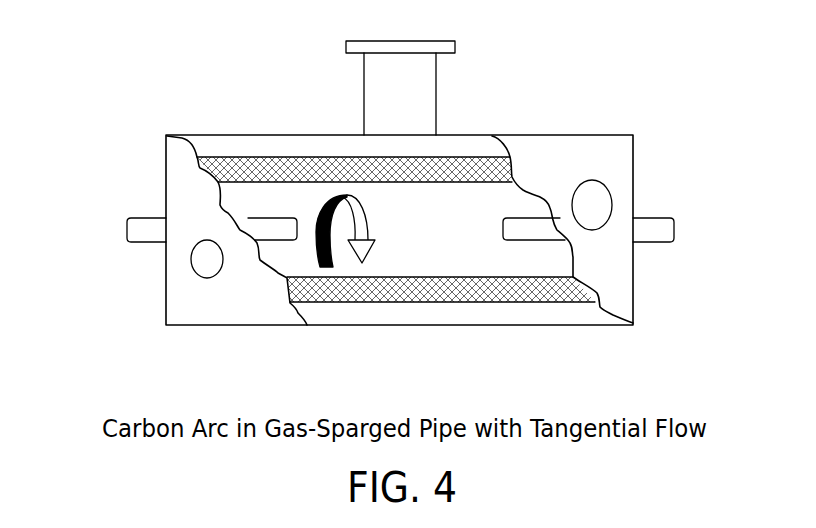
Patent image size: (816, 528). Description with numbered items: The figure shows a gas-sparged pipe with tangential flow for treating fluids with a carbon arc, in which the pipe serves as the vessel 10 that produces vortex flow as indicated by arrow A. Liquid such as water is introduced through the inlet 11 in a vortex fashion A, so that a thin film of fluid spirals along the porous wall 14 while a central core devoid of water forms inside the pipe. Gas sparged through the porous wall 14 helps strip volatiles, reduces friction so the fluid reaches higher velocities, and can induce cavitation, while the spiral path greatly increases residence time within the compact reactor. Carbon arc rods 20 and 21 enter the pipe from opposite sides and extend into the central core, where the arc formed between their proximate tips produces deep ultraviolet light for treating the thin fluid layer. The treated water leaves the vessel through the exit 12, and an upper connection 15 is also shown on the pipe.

The vessel 10 is at (212, 307).
The inlet 11 is at (203, 263).
The exit 12 is at (598, 198).
The porous wall 14 is at (533, 290).
The outlet pipe with flange 15 is at (408, 92).
The carbon arc rod 20 is at (143, 232).
The carbon arc rod 21 is at (657, 227).
The vortex flow A is at (318, 212).